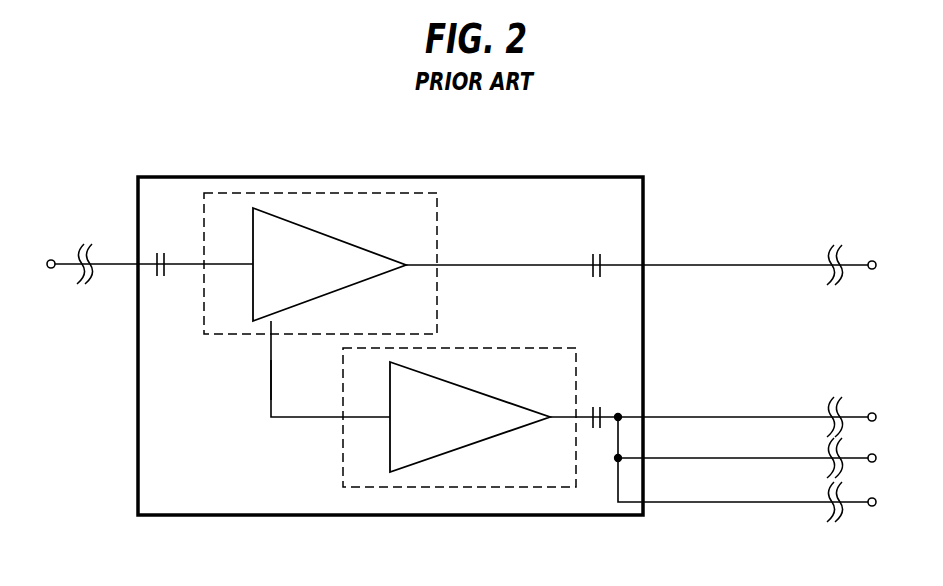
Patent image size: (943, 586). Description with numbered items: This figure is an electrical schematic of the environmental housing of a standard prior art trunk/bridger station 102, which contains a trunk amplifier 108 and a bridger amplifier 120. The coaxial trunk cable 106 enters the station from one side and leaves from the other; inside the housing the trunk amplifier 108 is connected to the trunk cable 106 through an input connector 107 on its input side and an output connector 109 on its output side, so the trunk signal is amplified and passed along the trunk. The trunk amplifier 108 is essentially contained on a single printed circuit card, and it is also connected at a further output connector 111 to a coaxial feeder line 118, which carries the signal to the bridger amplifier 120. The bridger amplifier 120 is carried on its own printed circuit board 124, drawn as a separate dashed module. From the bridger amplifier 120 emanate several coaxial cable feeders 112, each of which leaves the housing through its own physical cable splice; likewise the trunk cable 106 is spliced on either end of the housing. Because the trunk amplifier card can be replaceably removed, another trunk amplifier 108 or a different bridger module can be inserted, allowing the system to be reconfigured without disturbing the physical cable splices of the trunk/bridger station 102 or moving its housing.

The trunk/bridger station 102 is at (645, 180).
The coaxial trunk cable 106 is at (117, 267).
The input connector 107 is at (203, 263).
The trunk amplifier 108 is at (325, 233).
The output connector 109 is at (438, 263).
The output connector 111 is at (272, 335).
The coaxial cable feeder 112 is at (803, 417).
The coaxial feeder line 118 is at (271, 375).
The bridger amplifier 120 is at (477, 390).
The bridger amplifier printed circuit board 124 is at (488, 347).